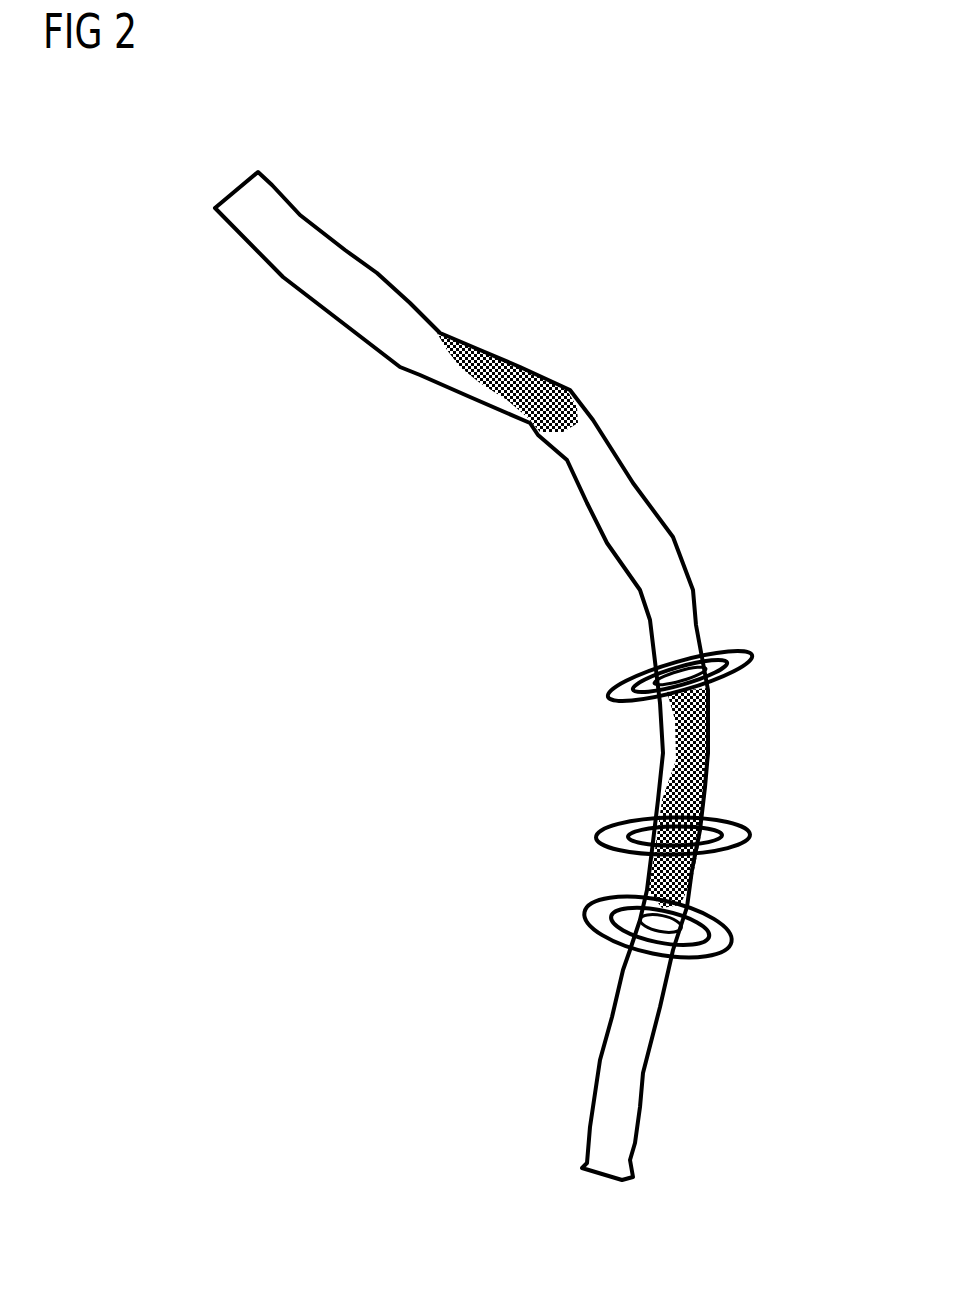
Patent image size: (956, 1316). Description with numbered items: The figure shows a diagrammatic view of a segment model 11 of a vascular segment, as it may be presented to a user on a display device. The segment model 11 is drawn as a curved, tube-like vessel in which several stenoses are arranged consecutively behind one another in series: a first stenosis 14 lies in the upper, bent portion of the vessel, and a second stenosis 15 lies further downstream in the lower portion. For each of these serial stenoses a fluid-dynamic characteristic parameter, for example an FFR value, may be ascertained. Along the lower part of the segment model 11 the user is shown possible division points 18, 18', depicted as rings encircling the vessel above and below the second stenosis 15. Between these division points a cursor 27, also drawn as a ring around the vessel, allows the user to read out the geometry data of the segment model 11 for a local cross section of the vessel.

The segment model 11 is at (246, 188).
The stenosis 14 is at (523, 362).
The stenosis 15 is at (732, 768).
The division point 18 is at (720, 675).
The cursor 27 is at (750, 836).
The division point 18' is at (701, 927).